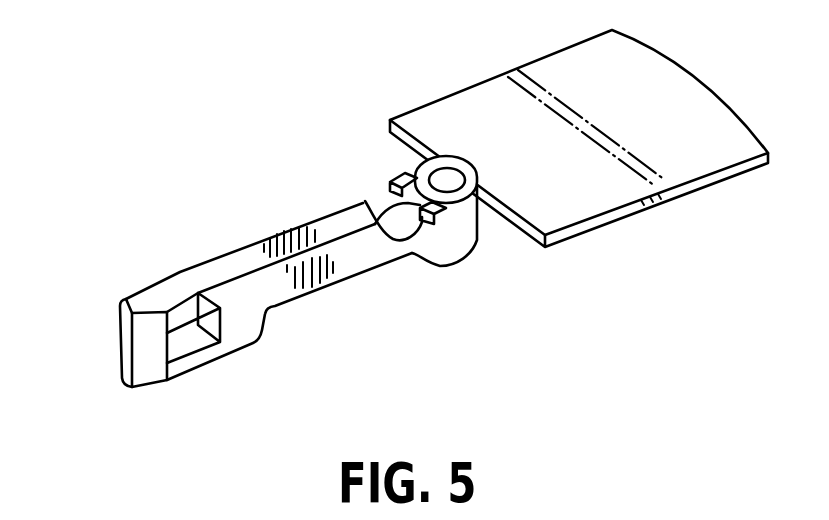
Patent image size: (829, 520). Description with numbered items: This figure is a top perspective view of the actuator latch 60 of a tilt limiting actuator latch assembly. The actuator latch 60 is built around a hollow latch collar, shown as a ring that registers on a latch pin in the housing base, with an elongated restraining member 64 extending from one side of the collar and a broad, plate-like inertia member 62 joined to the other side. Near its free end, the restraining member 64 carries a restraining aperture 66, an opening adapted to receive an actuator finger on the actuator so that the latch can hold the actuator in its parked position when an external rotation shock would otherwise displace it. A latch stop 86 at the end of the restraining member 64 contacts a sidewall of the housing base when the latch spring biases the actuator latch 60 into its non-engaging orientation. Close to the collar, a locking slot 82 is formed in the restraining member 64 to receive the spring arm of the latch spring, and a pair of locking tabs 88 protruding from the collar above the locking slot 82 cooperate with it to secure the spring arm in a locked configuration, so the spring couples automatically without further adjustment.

The actuator latch 60 is at (405, 223).
The inertia member 62 is at (628, 123).
The elongated restraining member 64 is at (340, 272).
The restraining aperture 66 is at (205, 363).
The locking slot 82 is at (387, 178).
The latch stop 86 is at (120, 323).
The locking tabs 88 is at (382, 192).